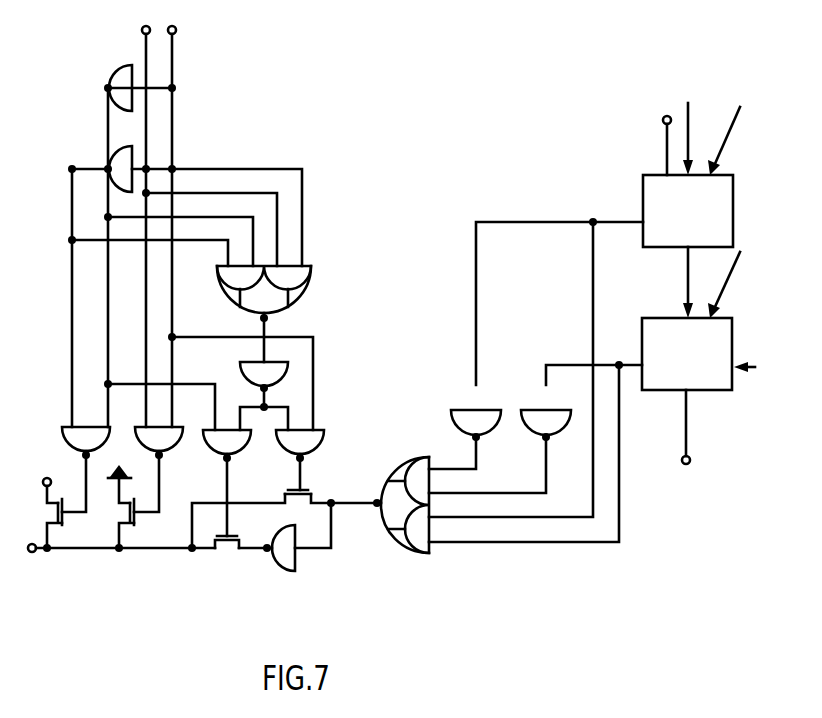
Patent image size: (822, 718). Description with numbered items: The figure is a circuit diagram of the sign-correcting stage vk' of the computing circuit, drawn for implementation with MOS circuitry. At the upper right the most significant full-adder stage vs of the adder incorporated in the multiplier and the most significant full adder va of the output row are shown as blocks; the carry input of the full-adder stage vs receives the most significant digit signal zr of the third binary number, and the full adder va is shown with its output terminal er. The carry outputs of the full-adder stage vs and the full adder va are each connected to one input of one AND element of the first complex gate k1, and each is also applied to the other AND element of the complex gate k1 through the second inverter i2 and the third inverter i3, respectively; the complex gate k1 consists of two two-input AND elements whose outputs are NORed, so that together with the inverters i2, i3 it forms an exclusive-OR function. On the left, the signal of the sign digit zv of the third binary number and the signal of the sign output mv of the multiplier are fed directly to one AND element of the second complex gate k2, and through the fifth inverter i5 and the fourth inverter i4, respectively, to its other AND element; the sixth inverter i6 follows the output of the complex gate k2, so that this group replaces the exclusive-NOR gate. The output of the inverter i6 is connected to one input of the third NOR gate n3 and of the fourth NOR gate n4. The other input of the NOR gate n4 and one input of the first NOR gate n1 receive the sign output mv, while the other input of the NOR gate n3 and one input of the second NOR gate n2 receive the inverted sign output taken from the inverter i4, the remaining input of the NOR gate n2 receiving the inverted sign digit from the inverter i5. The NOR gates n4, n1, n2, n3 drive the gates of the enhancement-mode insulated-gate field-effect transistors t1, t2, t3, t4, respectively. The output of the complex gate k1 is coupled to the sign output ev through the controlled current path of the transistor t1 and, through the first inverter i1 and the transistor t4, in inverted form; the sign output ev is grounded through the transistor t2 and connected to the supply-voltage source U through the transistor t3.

The sign digit zv is at (131, 222).
The sign output of the multiplier mv is at (191, 222).
The fourth inverter i4 is at (98, 88).
The fifth inverter i5 is at (88, 170).
The sixth inverter i6 is at (250, 367).
The first inverter i1 is at (284, 565).
The second inverter i2 is at (470, 409).
The third inverter i3 is at (543, 409).
The second complex gate k2 is at (281, 289).
The first complex gate k1 is at (405, 492).
The sign-correcting stage vk' is at (386, 209).
The first NOR gate n1 is at (152, 427).
The second NOR gate n2 is at (75, 427).
The third NOR gate n3 is at (221, 430).
The fourth NOR gate n4 is at (313, 430).
The first field-effect transistor t1 is at (315, 485).
The second field-effect transistor t2 is at (134, 504).
The third field-effect transistor t3 is at (73, 521).
The fourth field-effect transistor t4 is at (228, 557).
The supply-voltage source U is at (48, 470).
The sign output of the computing circuit ev is at (39, 561).
The most significant digit signal of the third binary number zr is at (666, 134).
The full-adder stage vs is at (691, 175).
The full adder va is at (698, 318).
The output terminal er is at (688, 440).